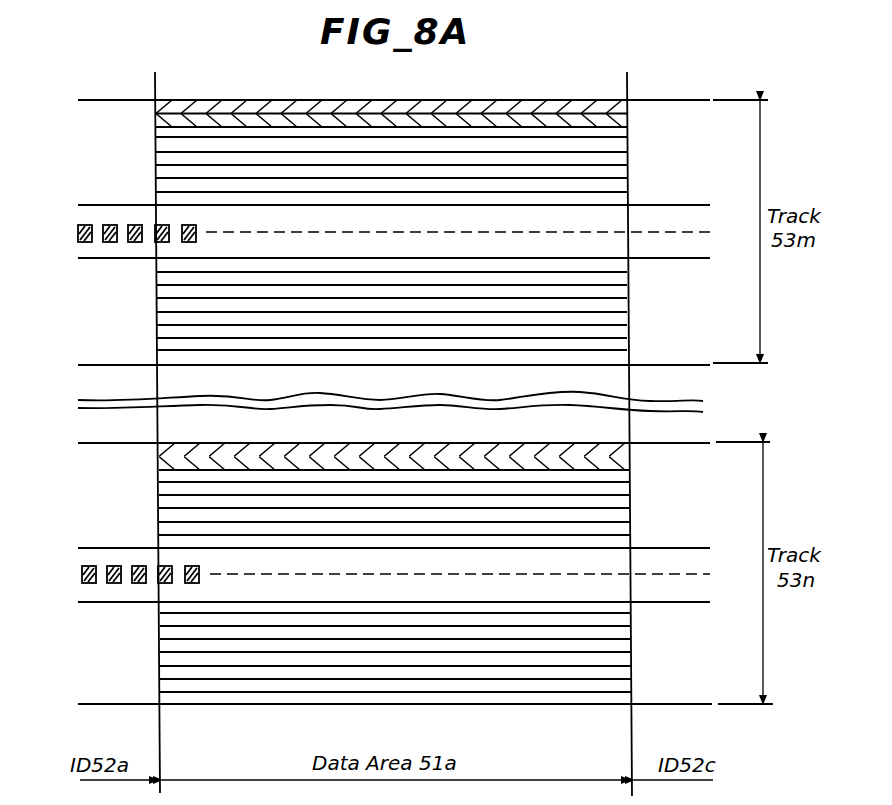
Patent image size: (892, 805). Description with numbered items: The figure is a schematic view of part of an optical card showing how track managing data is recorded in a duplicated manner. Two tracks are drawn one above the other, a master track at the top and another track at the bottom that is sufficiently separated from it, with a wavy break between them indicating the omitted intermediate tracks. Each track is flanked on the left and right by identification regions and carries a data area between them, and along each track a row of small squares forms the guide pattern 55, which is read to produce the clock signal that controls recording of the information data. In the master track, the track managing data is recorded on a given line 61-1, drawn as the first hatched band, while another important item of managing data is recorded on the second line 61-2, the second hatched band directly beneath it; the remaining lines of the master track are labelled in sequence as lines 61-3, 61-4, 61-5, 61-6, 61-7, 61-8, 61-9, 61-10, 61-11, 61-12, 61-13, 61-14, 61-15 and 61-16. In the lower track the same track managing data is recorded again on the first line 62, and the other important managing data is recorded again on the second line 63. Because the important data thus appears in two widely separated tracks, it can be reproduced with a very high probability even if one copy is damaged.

The guide pattern 55 is at (77, 231).
The first line 62 is at (155, 104).
The second line 63 is at (155, 118).
The given line 61-1 is at (630, 102).
The second line 61-2 is at (628, 114).
The sector line 61-3 is at (630, 127).
The sector line 61-4 is at (628, 137).
The sector line 61-5 is at (630, 152).
The sector line 61-6 is at (628, 165).
The sector line 61-7 is at (630, 179).
The sector line 61-8 is at (628, 194).
The sector line 61-9 is at (630, 260).
The sector line 61-10 is at (629, 272).
The sector line 61-11 is at (630, 286).
The sector line 61-12 is at (629, 298).
The sector line 61-13 is at (630, 313).
The sector line 61-14 is at (629, 326).
The sector line 61-15 is at (630, 340).
The sector line 61-16 is at (629, 352).